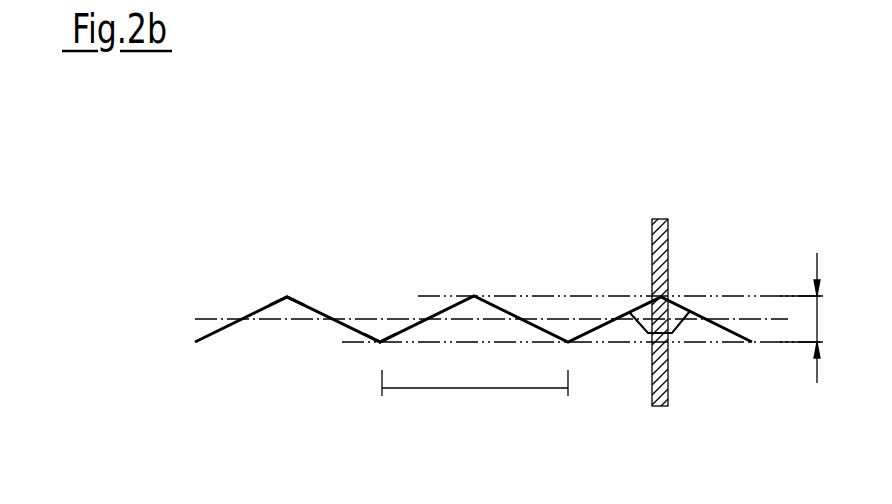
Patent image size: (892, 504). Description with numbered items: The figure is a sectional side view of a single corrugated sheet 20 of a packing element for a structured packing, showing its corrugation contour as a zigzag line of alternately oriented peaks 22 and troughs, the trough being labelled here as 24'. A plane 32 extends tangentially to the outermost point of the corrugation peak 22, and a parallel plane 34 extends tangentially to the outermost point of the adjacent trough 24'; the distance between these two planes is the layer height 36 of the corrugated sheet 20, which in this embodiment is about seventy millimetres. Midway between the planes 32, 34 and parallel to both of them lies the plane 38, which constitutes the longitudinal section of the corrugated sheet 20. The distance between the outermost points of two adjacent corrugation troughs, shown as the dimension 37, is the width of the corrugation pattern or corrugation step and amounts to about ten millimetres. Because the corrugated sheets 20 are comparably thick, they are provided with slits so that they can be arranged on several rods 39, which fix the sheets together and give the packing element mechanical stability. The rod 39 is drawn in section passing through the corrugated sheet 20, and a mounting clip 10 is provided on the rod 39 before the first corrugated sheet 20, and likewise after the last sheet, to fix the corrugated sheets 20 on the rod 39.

The corrugated sheet 20 is at (546, 220).
The corrugation peak 22 is at (287, 297).
The valley (lower bend) of web 24' is at (369, 281).
The plane 38 is at (205, 320).
The plane 34 is at (380, 343).
The plane 32 is at (733, 295).
The rod 39 is at (652, 400).
The mounting clip 10 is at (670, 335).
The width of the corrugation pattern 37 is at (497, 388).
The layer height 36 is at (825, 317).